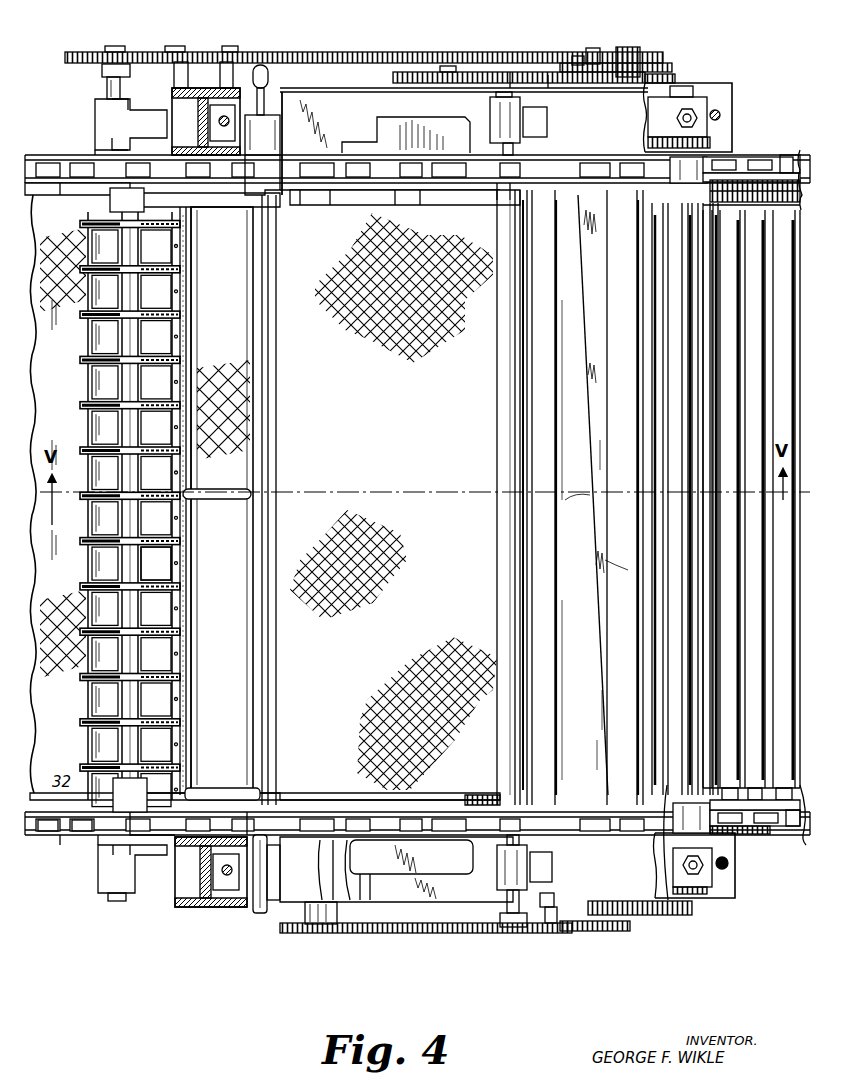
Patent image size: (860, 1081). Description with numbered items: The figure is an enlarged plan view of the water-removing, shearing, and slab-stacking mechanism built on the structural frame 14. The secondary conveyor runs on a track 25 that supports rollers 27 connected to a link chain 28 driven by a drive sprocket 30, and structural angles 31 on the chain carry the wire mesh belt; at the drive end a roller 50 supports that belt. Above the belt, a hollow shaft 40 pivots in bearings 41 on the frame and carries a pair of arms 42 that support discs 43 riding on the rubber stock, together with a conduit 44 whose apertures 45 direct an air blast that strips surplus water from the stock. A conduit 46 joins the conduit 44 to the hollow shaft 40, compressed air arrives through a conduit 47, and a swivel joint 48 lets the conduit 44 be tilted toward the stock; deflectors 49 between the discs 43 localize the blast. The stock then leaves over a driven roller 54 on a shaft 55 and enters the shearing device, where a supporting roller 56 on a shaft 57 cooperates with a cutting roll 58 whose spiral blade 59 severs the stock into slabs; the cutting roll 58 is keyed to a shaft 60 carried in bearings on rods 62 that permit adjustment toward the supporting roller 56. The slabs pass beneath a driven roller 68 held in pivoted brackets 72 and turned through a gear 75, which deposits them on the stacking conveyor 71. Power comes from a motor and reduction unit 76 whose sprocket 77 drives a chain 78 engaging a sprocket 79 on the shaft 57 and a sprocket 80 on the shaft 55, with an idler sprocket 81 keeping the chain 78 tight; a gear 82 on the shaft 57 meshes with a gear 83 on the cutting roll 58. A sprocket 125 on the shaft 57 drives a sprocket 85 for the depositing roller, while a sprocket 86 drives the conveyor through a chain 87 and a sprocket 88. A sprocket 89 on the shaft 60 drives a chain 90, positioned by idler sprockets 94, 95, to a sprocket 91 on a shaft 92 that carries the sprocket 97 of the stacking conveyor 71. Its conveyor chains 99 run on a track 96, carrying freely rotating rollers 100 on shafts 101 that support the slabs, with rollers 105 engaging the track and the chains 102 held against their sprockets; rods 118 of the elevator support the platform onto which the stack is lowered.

The structural frame 14 is at (213, 908).
The track 25 is at (73, 848).
The roller 27 is at (95, 838).
The link chain 28 is at (65, 838).
The drive sprocket 30 is at (486, 796).
The structural angle 31 is at (65, 160).
The hollow shaft 40 is at (277, 683).
The bearing 41 is at (283, 100).
The arm 42 is at (218, 208).
The disc 43 is at (90, 224).
The conduit 44 is at (181, 297).
The aperture 45 is at (184, 337).
The conduit 46 is at (248, 494).
The conduit 47 is at (259, 65).
The swivel joint 48 is at (265, 113).
The deflector 49 is at (160, 657).
The roller 50 is at (432, 195).
The driven roller 54 is at (560, 598).
The shaft 55 is at (515, 926).
The supporting roller 56 is at (525, 448).
The shaft 57 is at (580, 56).
The cutting roll 58 is at (628, 568).
The spiral blade 59 is at (595, 495).
The shaft 60 is at (628, 47).
The rod 62 is at (708, 870).
The driven roller 68 is at (667, 860).
The stacking conveyor 71 is at (780, 165).
The bracket 72 is at (712, 152).
The gear 75 is at (720, 140).
The motor and reduction unit 76 is at (273, 893).
The sprocket 77 is at (310, 924).
The chain 78 is at (394, 933).
The sprocket 79 is at (600, 931).
The sprocket 80 is at (501, 924).
The idler sprocket 81 is at (551, 925).
The gear 82 is at (548, 912).
The gear 83 is at (652, 915).
The sprocket 85 is at (672, 76).
The sprocket 86 is at (549, 72).
The chain 87 is at (518, 72).
The sprocket 88 is at (460, 72).
The sprocket 89 is at (662, 63).
The chain 90 is at (400, 52).
The sprocket 91 is at (102, 70).
The shaft 92 is at (108, 88).
The idler sprocket 94 is at (180, 62).
The idler sprocket 95 is at (227, 62).
The track 96 is at (795, 158).
The sprocket 97 is at (118, 846).
The conveyor chain 99 is at (762, 826).
The roller 100 is at (812, 790).
The shaft 101 is at (740, 830).
The chain 102 is at (742, 172).
The roller 105 is at (800, 150).
The rod 118 is at (728, 868).
The sprocket 125 is at (590, 48).